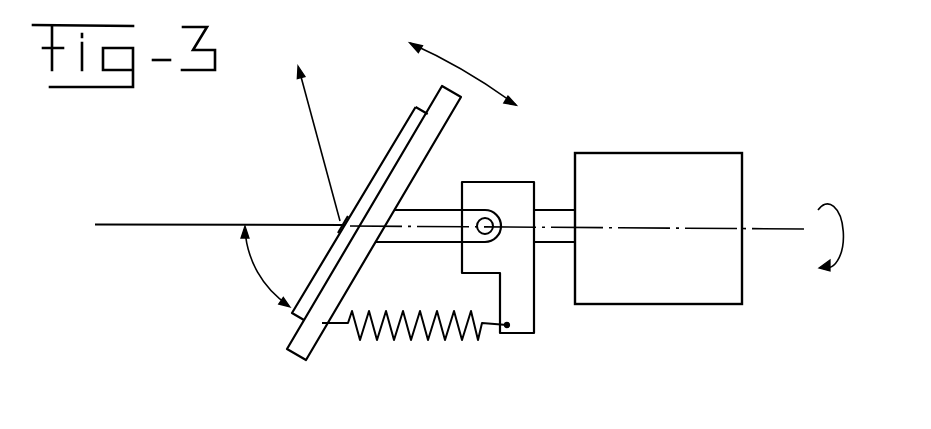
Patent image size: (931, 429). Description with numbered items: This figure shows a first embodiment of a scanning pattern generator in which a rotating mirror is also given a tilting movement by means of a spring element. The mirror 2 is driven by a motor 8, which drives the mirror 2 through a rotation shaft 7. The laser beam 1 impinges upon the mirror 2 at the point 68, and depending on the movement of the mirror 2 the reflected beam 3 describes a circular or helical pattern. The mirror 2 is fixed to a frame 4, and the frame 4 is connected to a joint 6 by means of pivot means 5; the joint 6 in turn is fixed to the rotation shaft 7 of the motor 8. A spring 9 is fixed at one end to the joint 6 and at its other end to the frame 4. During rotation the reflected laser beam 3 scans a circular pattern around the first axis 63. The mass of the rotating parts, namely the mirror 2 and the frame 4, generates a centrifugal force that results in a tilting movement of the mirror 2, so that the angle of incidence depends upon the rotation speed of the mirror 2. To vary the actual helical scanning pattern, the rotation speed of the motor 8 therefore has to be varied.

The laser beam 1 is at (163, 224).
The mirror 2 is at (406, 131).
The reflected beam 3 is at (310, 104).
The frame 4 is at (296, 352).
The pivot means 5 is at (503, 213).
The joint 6 is at (476, 197).
The rotation shaft 7 is at (552, 219).
The motor 8 is at (730, 170).
The spring 9 is at (432, 328).
The first axis 63 is at (770, 230).
The point of impingement 68 is at (342, 224).